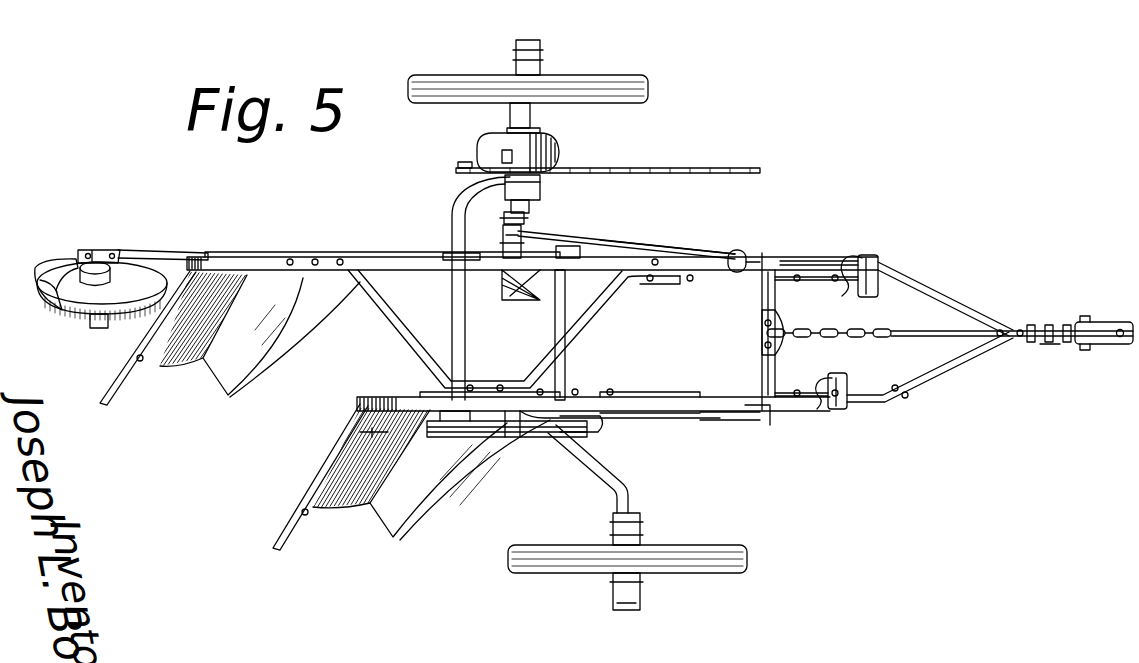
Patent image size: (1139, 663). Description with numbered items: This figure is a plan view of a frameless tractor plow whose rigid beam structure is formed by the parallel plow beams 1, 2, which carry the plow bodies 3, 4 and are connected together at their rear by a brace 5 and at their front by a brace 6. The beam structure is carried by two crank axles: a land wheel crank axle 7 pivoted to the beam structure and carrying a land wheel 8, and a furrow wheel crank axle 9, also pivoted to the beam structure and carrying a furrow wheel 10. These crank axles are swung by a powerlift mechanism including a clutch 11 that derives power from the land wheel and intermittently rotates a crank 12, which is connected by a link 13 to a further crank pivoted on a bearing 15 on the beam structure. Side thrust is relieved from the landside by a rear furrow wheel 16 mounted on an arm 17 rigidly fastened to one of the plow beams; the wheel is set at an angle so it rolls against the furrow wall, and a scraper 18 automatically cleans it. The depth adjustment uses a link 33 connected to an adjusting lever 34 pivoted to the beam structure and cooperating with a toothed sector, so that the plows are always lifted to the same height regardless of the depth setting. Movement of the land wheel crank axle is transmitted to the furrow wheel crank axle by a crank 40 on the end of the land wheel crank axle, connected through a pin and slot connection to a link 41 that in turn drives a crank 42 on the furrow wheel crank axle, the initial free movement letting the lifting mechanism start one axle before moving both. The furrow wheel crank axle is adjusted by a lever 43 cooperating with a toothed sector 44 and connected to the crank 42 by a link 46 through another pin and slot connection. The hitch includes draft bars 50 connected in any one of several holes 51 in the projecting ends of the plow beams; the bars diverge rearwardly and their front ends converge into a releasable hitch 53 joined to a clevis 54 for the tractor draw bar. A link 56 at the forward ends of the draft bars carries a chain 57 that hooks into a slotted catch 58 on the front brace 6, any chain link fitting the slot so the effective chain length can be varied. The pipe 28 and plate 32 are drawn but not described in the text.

The plow beam 1 is at (696, 272).
The plow beam 2 is at (646, 397).
The plow body 3 is at (272, 338).
The plow body 4 is at (445, 488).
The brace 5 is at (410, 340).
The brace 6 is at (768, 365).
The land wheel crank axle 7 is at (455, 293).
The land wheel 8 is at (445, 95).
The furrow wheel crank axle 9 is at (590, 460).
The furrow wheel 10 is at (705, 548).
The clutch 11 is at (562, 150).
The crank 12 is at (528, 218).
The link 13 is at (503, 240).
The bearing 15 is at (588, 244).
The rear furrow wheel 16 is at (95, 302).
The arm 17 is at (150, 252).
The scraper 18 is at (52, 286).
The curved pipe 28 is at (470, 168).
The rack plate 32 is at (700, 168).
The link 33 is at (672, 244).
The adjusting lever 34 is at (738, 250).
The crank 40 is at (465, 437).
The link 41 is at (542, 437).
The crank 42 is at (595, 433).
The lever 43 is at (835, 420).
The toothed sector 44 is at (720, 420).
The link 46 is at (675, 420).
The draft bars 50 is at (960, 303).
The holes 51 is at (855, 395).
The releasable hitch 53 is at (1040, 344).
The clevis 54 is at (1105, 325).
The link 56 is at (940, 337).
The chain 57 is at (880, 330).
The catch 58 is at (790, 345).